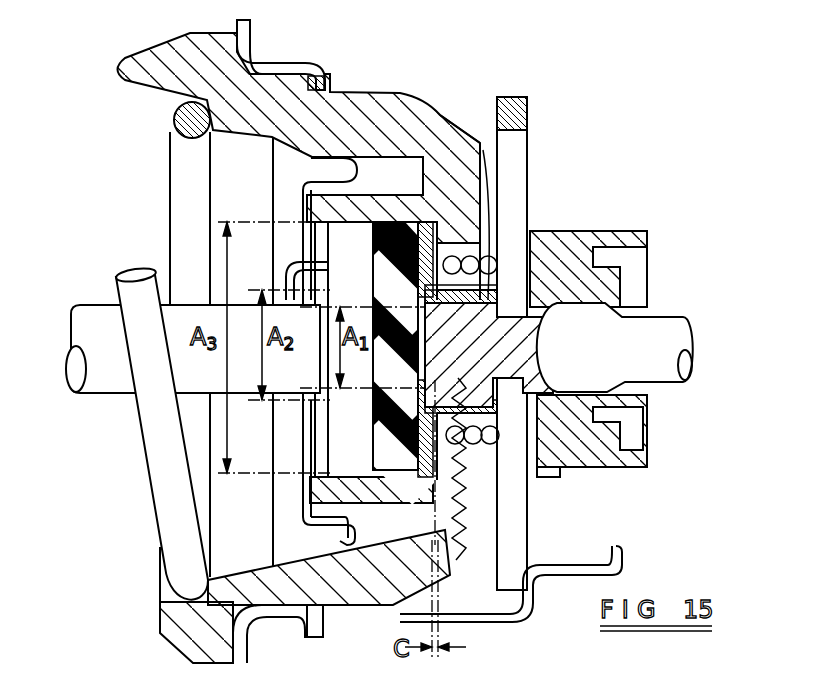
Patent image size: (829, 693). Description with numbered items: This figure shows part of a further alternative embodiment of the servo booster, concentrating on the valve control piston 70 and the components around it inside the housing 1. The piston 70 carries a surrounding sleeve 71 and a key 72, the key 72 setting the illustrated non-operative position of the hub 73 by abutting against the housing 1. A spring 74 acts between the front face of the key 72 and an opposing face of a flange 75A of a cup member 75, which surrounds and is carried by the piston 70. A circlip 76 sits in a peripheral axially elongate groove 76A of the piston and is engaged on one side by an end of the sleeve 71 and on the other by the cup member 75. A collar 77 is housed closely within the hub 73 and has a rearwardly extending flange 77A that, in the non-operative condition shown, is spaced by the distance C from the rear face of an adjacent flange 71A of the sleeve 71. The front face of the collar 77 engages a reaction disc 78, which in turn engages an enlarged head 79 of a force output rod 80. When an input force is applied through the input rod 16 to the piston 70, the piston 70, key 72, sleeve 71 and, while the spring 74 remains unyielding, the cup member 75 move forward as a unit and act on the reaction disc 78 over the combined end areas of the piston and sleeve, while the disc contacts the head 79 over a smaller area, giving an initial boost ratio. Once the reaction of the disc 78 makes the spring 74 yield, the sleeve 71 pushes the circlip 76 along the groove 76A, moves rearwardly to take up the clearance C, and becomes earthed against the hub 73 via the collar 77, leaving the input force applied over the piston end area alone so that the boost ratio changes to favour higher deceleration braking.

The housing 1 is at (522, 640).
The input rod 16 is at (672, 327).
The valve control piston 70 is at (399, 357).
The sleeve 71 is at (418, 383).
The flange of the sleeve 71A is at (530, 476).
The key 72 is at (520, 140).
The hub 73 is at (401, 96).
The spring 74 is at (490, 263).
The cup member 75 is at (503, 308).
The flange of the cup member 75A is at (445, 197).
The circlip 76 is at (430, 316).
The peripheral axially elongate groove 76A is at (580, 212).
The collar 77 is at (380, 241).
The rearwardly extending flange of the collar 77A is at (432, 290).
The reaction disc 78 is at (305, 262).
The enlarged head 79 is at (362, 225).
The force output rod 80 is at (178, 322).